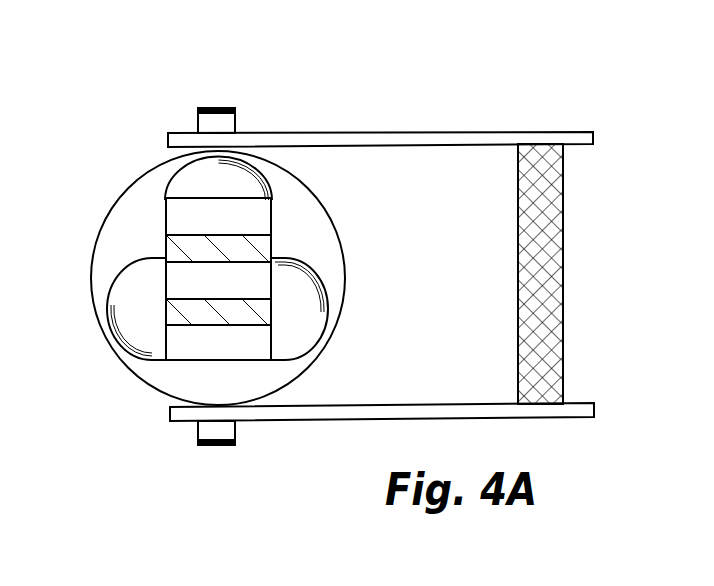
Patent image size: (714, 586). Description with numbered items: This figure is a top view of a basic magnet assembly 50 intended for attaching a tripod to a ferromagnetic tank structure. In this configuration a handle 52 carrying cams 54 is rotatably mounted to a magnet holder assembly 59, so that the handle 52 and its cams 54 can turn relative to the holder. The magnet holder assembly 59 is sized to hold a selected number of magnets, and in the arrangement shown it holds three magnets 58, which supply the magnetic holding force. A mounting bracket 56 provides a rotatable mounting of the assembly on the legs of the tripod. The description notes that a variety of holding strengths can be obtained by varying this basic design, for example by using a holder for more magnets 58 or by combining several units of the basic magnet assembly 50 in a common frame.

The basic magnet assembly 50 is at (296, 50).
The handle 52 is at (488, 140).
The cams 54 is at (193, 413).
The mounting bracket 56 is at (255, 277).
The magnets 58 is at (190, 192).
The magnet holder assembly 59 is at (282, 230).